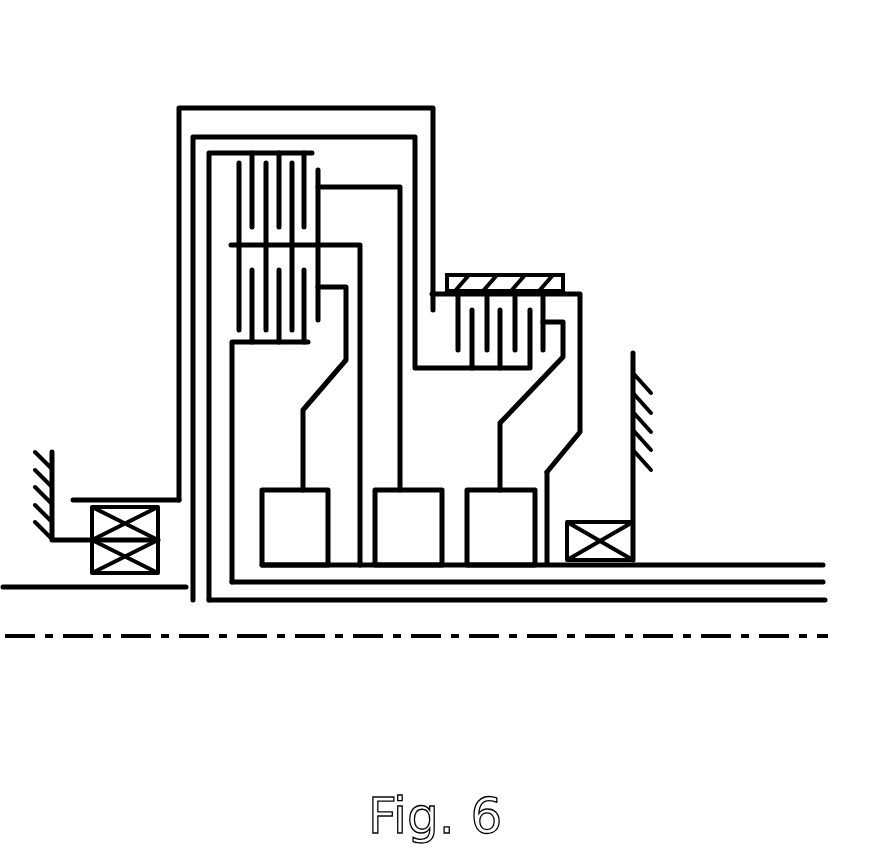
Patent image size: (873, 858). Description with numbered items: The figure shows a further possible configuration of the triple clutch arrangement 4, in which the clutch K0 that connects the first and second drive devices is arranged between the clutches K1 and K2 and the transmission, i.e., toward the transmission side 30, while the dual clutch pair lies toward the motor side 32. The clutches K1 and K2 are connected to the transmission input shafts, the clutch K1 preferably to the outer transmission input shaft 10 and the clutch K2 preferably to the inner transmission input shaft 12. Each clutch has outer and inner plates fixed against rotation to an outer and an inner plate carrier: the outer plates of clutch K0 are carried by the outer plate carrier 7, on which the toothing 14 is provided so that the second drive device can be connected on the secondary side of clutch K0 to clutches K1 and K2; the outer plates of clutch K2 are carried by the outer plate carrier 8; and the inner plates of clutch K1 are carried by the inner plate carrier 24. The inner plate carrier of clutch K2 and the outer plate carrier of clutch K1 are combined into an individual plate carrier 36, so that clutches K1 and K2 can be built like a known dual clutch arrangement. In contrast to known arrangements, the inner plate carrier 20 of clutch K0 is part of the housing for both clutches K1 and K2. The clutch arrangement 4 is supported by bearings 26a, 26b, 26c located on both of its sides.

The clutch arrangement 4 is at (558, 86).
The outer plate carrier 7 is at (582, 330).
The outer plate carrier 8 is at (210, 200).
The transmission input shaft 10 is at (677, 583).
The transmission input shaft 12 is at (637, 600).
The toothing 14 is at (513, 276).
The inner plate carrier 20 is at (448, 372).
The inner plate carrier 24 is at (228, 410).
The bearing 26a is at (618, 540).
The bearing 26b is at (118, 500).
The bearing 26c is at (127, 575).
The transmission side 30 is at (727, 360).
The motor side 32 is at (103, 220).
The individual plate carrier 36 is at (362, 260).
The clutch K0 is at (613, 297).
The clutch K1 is at (224, 287).
The clutch K2 is at (329, 150).